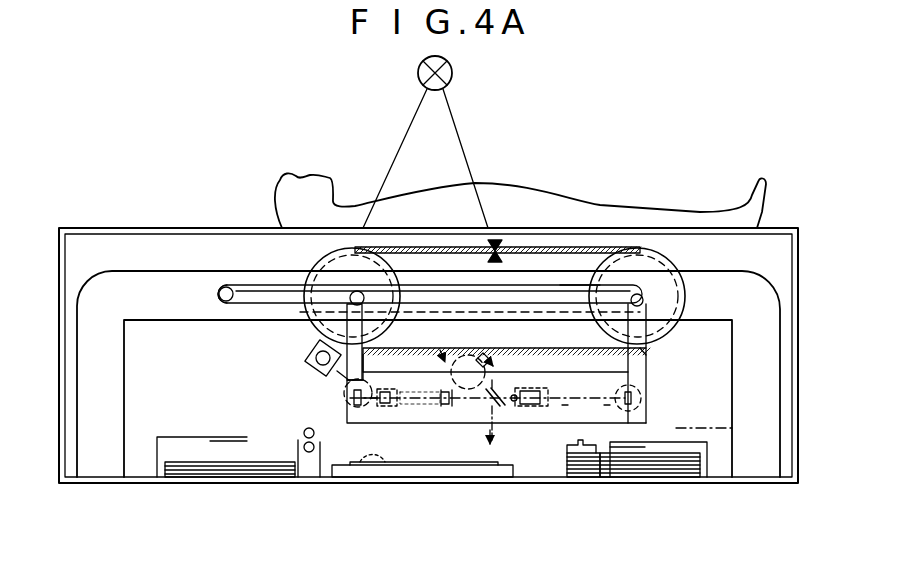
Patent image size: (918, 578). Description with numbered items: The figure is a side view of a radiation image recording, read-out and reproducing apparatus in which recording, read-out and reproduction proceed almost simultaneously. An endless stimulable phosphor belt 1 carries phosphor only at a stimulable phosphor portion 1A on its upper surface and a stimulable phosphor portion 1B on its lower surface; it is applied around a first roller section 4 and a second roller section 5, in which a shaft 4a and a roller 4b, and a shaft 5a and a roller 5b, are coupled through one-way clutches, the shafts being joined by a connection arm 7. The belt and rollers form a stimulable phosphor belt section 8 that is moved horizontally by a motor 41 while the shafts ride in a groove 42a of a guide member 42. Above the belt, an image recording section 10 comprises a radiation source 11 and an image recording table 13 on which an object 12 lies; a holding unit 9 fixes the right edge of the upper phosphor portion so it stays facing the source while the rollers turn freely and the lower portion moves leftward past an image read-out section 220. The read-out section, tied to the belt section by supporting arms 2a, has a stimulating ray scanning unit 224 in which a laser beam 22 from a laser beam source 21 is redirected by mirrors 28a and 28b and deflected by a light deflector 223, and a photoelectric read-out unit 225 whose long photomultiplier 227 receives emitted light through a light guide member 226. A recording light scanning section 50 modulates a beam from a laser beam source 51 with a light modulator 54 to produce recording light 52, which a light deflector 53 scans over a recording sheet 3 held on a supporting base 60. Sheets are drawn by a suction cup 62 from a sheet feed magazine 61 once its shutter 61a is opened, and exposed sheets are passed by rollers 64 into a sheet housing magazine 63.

The stimulable phosphor belt 1 is at (571, 245).
The stimulable phosphor portion 1A is at (417, 247).
The stimulable phosphor portion 1B is at (652, 371).
The supporting arms 2a is at (372, 344).
The recording sheet 3 is at (194, 460).
The first roller section 4 is at (337, 266).
The shaft 4a is at (322, 305).
The roller 4b is at (308, 361).
The second roller section 5 is at (639, 257).
The shaft 5a is at (665, 264).
The roller 5b is at (681, 309).
The connection arm 7 is at (582, 300).
The stimulable phosphor belt section 8 is at (526, 264).
The holding unit 9 is at (494, 240).
The image recording section 10 is at (503, 160).
The radiation source 11 is at (452, 74).
The object 12 is at (422, 187).
The image recording table 13 is at (236, 228).
The laser beam source 21 is at (634, 409).
The laser beam 22 is at (733, 428).
The mirror 28a is at (641, 393).
The mirror 28b is at (497, 409).
The motor 41 is at (290, 278).
The guide member 42 is at (188, 288).
The groove 42a is at (226, 304).
The recording light scanning section 50 is at (398, 408).
The laser beam source 51 is at (345, 411).
The recording light 52 is at (414, 406).
The light deflector 53 is at (437, 407).
The light modulator 54 is at (343, 385).
The supporting base 60 is at (421, 470).
The sheet feed magazine 61 is at (703, 460).
The shutter 61a is at (638, 449).
The suction cup 62 is at (582, 453).
The sheet housing magazine 63 is at (160, 445).
The rollers 64 is at (310, 453).
The image read-out section 220 is at (607, 407).
The light deflector 223 is at (507, 405).
The stimulating ray scanning unit 224 is at (565, 407).
The photoelectric read-out unit 225 is at (442, 356).
The light guide member 226 is at (486, 357).
The photomultiplier 227 is at (486, 356).